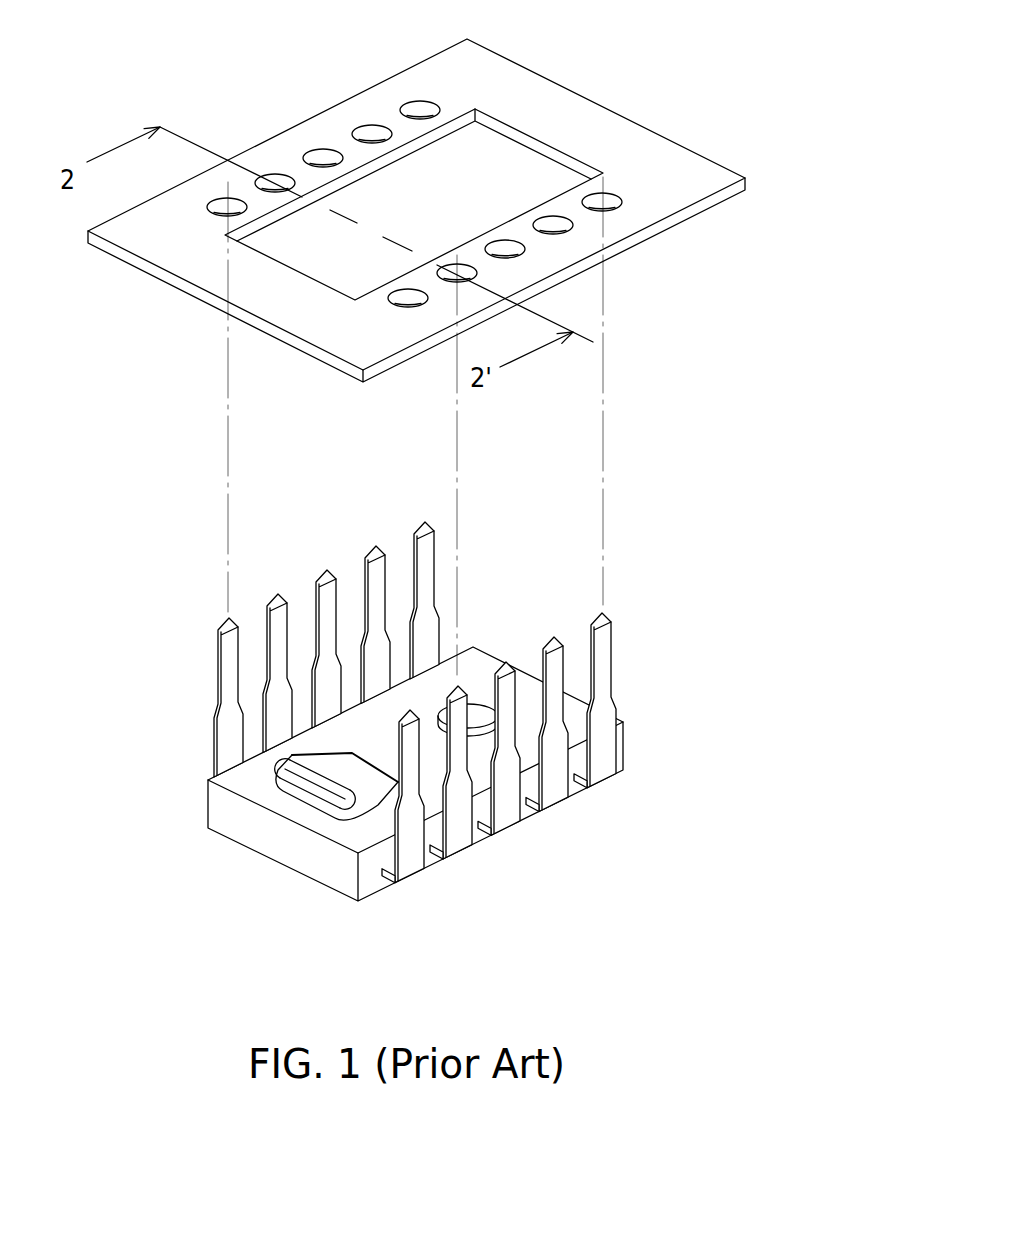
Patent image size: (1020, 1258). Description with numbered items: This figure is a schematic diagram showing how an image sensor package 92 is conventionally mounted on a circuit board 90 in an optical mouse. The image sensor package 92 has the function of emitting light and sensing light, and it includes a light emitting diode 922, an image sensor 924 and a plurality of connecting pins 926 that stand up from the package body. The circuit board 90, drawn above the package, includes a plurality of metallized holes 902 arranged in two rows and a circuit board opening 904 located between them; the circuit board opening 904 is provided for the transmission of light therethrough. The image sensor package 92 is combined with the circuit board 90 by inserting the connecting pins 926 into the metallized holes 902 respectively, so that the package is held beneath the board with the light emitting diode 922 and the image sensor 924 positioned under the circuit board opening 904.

The circuit board 90 is at (190, 290).
The metallized holes 902 is at (420, 112).
The circuit board opening 904 is at (500, 168).
The image sensor package 92 is at (176, 638).
The light emitting diode 922 is at (475, 727).
The image sensor 924 is at (303, 795).
The connecting pins 926 is at (607, 648).